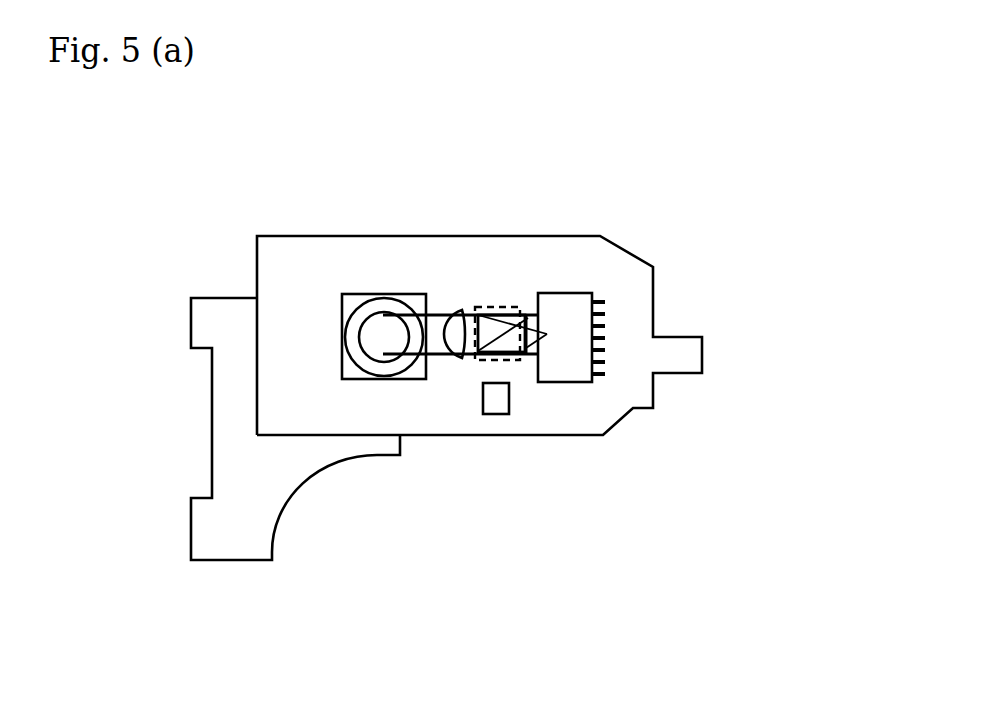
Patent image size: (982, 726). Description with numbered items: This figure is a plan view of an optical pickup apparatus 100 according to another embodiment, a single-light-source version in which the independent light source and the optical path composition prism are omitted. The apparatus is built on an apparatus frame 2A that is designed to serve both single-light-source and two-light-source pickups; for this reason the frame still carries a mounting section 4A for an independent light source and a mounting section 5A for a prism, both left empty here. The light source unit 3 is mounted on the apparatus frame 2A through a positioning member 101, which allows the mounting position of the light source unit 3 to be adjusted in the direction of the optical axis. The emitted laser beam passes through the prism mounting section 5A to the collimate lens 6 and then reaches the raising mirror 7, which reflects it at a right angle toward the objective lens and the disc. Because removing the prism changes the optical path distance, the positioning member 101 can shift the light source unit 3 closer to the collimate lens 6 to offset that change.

The optical pickup apparatus 100 is at (515, 318).
The apparatus frame 2A is at (653, 302).
The light source unit 3 is at (577, 293).
The mounting section 4A is at (495, 408).
The mounting section 5A is at (496, 307).
The collimate lens 6 is at (450, 315).
The raising mirror 7 is at (412, 293).
The positioning member 101 is at (547, 334).